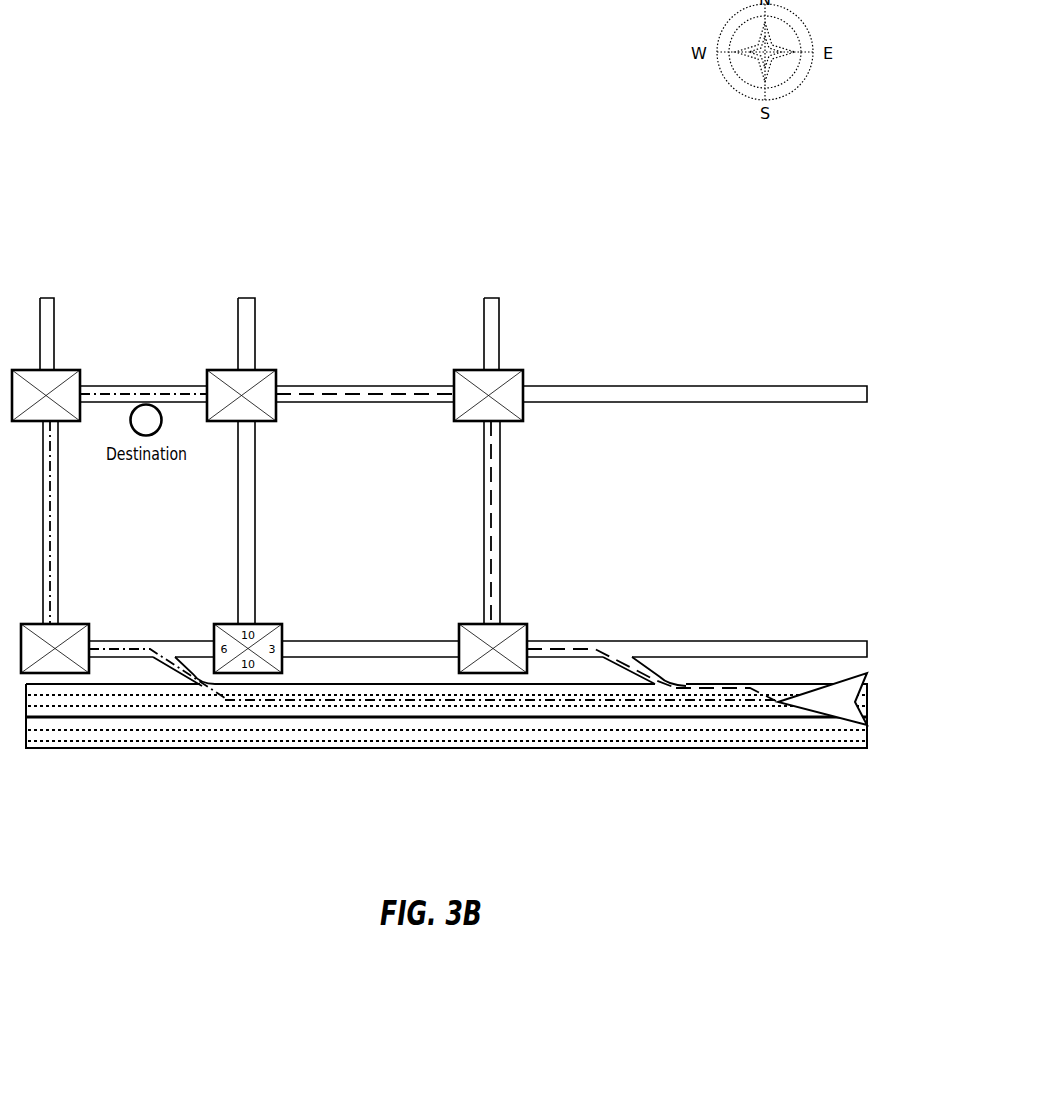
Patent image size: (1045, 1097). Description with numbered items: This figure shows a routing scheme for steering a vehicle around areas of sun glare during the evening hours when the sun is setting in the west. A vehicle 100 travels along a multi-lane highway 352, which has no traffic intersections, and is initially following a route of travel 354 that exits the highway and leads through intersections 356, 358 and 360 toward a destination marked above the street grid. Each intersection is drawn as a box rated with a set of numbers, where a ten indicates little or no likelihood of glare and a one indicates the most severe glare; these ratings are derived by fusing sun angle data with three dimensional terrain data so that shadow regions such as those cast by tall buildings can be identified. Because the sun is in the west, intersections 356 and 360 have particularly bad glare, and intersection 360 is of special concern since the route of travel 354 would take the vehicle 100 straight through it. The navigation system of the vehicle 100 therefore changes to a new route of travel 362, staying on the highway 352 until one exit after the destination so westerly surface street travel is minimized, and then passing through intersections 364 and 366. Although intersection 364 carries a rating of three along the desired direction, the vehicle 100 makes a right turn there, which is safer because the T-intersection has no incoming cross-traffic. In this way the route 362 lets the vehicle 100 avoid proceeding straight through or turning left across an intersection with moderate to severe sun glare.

The vehicle 100 is at (846, 708).
The highway 352 is at (668, 765).
The route of travel 354 is at (572, 650).
The intersection 356 is at (519, 610).
The intersection 358 is at (519, 361).
The intersection 360 is at (272, 361).
The new route of travel 362 is at (147, 649).
The intersection 364 is at (75, 610).
The intersection 366 is at (75, 361).